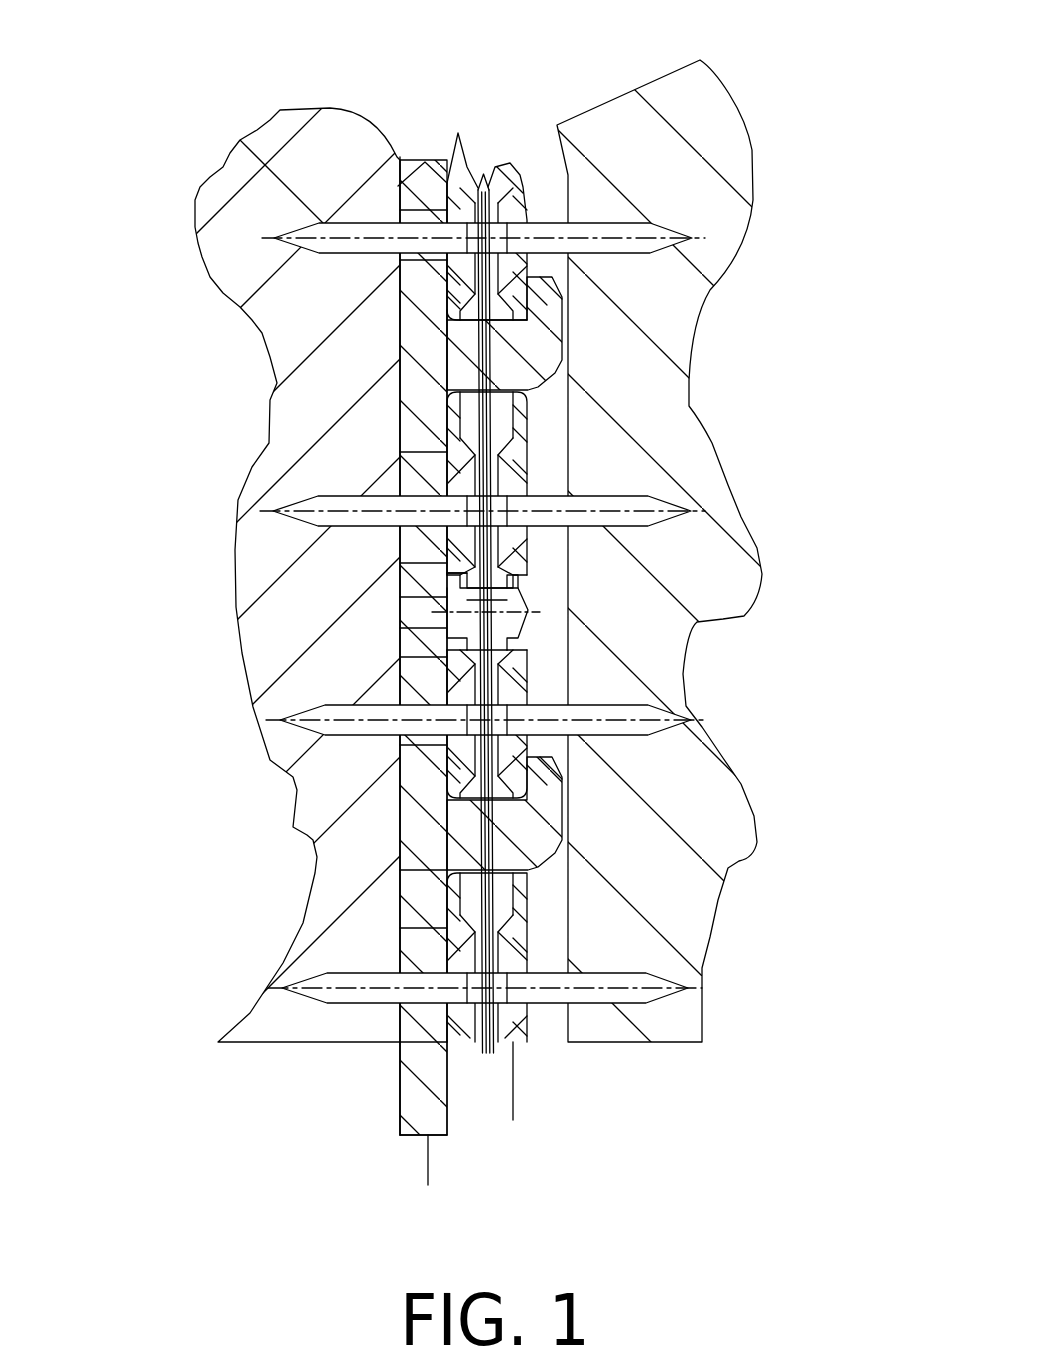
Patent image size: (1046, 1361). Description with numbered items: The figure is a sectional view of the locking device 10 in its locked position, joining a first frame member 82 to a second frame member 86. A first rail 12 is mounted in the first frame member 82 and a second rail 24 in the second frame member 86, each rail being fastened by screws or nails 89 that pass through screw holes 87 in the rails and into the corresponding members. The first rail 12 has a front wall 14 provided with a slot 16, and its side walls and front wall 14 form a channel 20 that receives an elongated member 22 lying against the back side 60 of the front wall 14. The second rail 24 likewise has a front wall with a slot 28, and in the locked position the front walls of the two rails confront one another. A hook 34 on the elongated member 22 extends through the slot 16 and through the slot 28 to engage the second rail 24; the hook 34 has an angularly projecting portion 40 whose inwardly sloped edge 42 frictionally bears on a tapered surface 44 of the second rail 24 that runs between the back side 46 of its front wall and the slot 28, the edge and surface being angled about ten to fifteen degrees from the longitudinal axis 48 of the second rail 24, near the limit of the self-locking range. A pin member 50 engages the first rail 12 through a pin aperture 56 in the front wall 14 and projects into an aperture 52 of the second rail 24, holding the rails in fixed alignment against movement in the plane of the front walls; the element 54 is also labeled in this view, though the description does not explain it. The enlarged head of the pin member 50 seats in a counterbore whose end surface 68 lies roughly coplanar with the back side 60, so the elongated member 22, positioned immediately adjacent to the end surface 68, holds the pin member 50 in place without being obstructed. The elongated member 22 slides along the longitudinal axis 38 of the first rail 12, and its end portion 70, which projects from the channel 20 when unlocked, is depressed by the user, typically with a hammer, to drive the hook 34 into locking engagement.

The locking device 10 is at (700, 45).
The first rail 12 is at (432, 170).
The front wall 14 is at (526, 528).
The slot 16 is at (661, 701).
The channel 20 is at (317, 87).
The elongated member 22 is at (280, 646).
The second rail 24 is at (579, 160).
The slot 28 is at (663, 660).
The hook 34 is at (653, 573).
The longitudinal axis 38 is at (519, 1174).
The angularly projecting portion 40 is at (704, 536).
The inwardly sloped edge 42 is at (704, 503).
The tapered surface 44 is at (298, 502).
The back side 46 is at (697, 406).
The longitudinal axis 48 is at (616, 1088).
The pin member 50 is at (657, 596).
The aperture 52 is at (696, 545).
The fitting tab 54 is at (277, 560).
The pin aperture 56 is at (308, 665).
The back side 60 is at (294, 635).
The end surface 68 is at (297, 596).
The end portion 70 is at (291, 1112).
The first frame member 82 is at (523, 575).
The second frame member 86 is at (732, 551).
The screw holes 87 is at (465, 721).
The screws or nails 89 is at (490, 546).